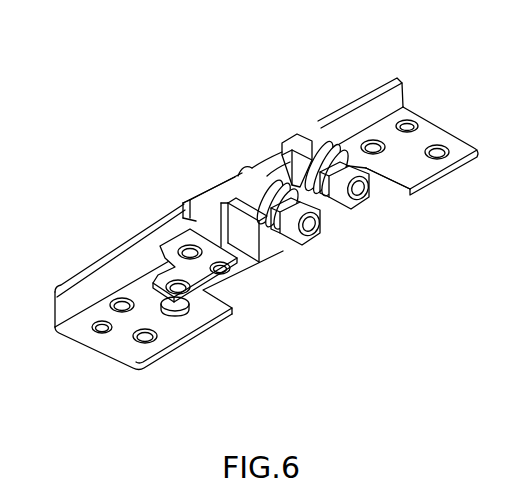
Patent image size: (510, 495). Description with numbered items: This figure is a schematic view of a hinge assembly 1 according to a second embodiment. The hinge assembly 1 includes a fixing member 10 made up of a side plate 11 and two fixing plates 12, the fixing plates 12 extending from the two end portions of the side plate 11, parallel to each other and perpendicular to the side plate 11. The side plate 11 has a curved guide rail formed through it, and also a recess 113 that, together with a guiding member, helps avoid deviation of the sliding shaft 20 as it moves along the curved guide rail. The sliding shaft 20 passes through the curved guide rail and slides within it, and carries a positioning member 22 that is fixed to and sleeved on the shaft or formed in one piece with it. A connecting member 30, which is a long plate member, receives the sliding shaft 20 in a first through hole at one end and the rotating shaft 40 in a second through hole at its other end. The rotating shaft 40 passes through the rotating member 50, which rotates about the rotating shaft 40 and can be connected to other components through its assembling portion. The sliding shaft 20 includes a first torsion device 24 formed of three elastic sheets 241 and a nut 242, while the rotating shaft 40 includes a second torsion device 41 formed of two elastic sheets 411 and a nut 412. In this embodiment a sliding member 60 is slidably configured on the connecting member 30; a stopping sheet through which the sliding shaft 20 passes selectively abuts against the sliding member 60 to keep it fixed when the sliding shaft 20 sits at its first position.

The hinge assembly 1 is at (40, 98).
The fixing member 10 is at (266, 263).
The side plate 11 is at (83, 323).
The fixing plate 12 is at (118, 338).
The recess 113 is at (263, 154).
The sliding shaft 20 is at (377, 193).
The positioning member 22 is at (284, 144).
The first torsion device 24 is at (375, 237).
The elastic sheets 241 is at (351, 218).
The nut 242 is at (378, 208).
The connecting member 30 is at (334, 138).
The rotating shaft 40 is at (322, 237).
The second torsion device 41 is at (277, 273).
The elastic sheets 411 is at (276, 240).
The nut 412 is at (313, 247).
The rotating member 50 is at (243, 278).
The sliding member 60 is at (225, 178).